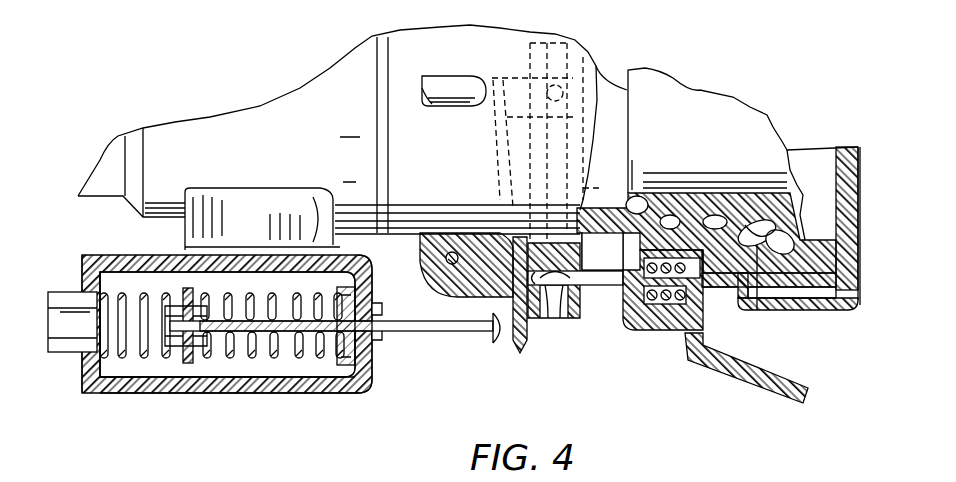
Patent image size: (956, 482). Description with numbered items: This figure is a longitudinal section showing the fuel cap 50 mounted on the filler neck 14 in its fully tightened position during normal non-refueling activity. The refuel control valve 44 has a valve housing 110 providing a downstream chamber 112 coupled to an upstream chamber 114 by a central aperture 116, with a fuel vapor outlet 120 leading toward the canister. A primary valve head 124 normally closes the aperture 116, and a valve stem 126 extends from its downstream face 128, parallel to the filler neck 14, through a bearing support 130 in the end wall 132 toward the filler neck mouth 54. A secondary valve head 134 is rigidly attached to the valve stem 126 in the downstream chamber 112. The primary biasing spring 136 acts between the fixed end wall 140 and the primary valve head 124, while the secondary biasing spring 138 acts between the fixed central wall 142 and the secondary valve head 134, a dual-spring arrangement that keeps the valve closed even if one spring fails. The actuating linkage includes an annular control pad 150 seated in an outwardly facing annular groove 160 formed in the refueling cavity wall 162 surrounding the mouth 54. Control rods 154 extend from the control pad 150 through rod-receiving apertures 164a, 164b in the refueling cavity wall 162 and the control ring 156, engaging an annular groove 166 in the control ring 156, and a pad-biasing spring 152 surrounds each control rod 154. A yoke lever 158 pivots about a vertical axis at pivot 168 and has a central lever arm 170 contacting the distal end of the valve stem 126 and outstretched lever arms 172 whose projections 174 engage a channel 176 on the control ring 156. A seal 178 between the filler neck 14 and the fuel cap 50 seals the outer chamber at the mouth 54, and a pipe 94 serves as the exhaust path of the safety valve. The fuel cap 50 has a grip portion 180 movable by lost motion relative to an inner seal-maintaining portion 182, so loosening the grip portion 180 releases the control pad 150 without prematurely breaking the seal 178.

The filler neck 14 is at (261, 108).
The pipe 94 is at (443, 82).
The projections 174 is at (517, 43).
The control ring 156 is at (600, 43).
The lever arms 172 is at (497, 133).
The yoke lever 158 is at (493, 147).
The seal-maintaining portion 182 is at (723, 200).
The seal 178 is at (818, 165).
The pivot 168 is at (461, 232).
The downstream chamber 112 is at (314, 213).
The refuel control valve 44 is at (173, 400).
The upstream chamber 114 is at (140, 282).
The primary biasing spring 136 is at (128, 340).
The end wall 140 is at (78, 357).
The primary valve head 124 is at (157, 363).
The valve housing 110 is at (300, 393).
The end wall 132 is at (372, 373).
The bearing support 130 is at (373, 304).
The fuel vapor outlet 120 is at (55, 290).
The central wall 142 is at (196, 300).
The downstream face 128 is at (190, 305).
The valve stem 126 is at (452, 331).
The central aperture 116 is at (212, 340).
The secondary biasing spring 138 is at (268, 362).
The secondary valve head 134 is at (339, 385).
The central lever arm 170 is at (525, 353).
The channel 176 is at (556, 305).
The control rods 154 is at (602, 278).
The rod-receiving aperture 164a is at (583, 287).
The rod-receiving aperture 164b is at (600, 300).
The annular groove 166 is at (552, 318).
The annular groove 160 is at (655, 318).
The control pad 150 is at (705, 290).
The pad-biasing spring 152 is at (710, 315).
The mouth 54 is at (757, 310).
The fuel cap 50 is at (815, 295).
The grip portion 180 is at (848, 299).
The refueling cavity wall 162 is at (790, 378).